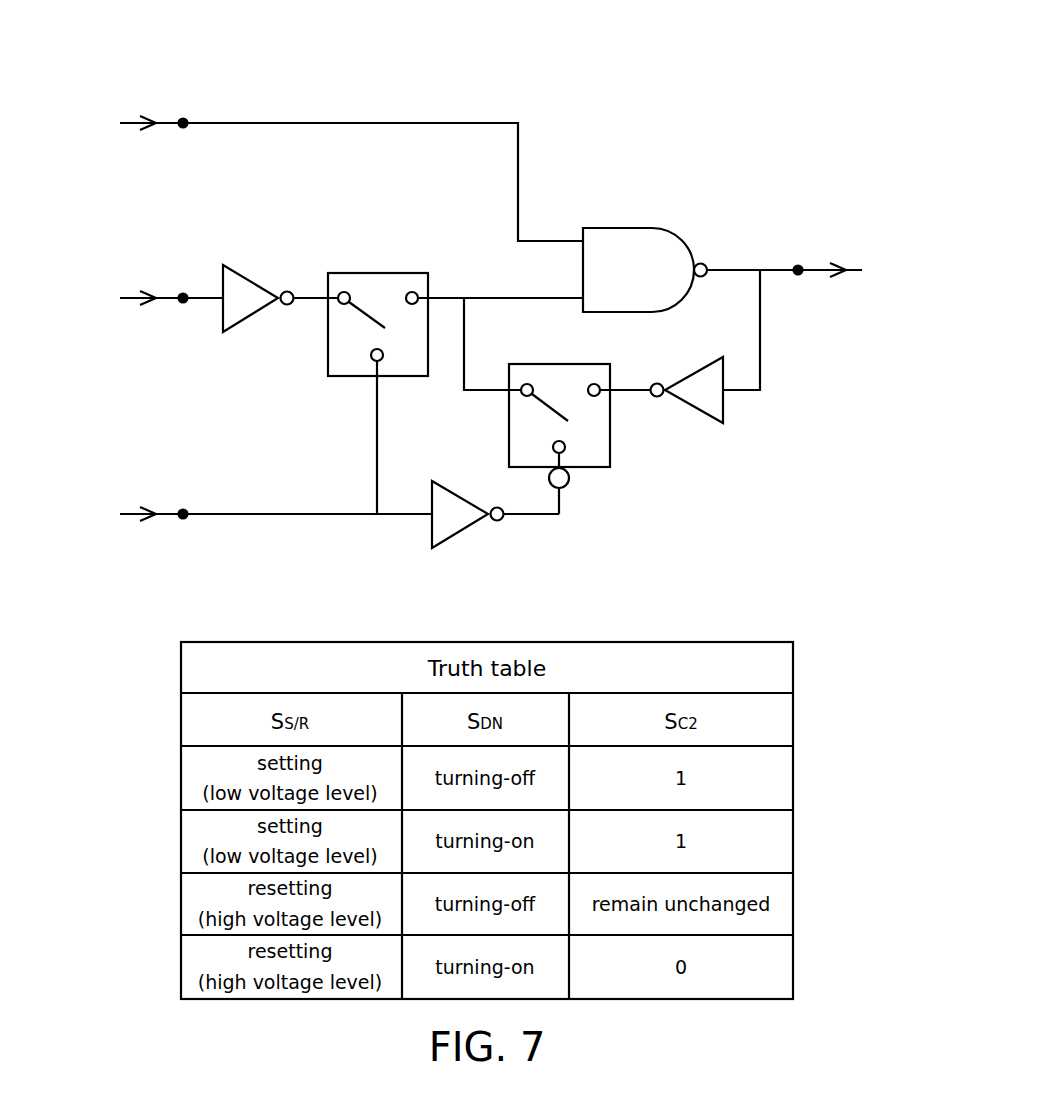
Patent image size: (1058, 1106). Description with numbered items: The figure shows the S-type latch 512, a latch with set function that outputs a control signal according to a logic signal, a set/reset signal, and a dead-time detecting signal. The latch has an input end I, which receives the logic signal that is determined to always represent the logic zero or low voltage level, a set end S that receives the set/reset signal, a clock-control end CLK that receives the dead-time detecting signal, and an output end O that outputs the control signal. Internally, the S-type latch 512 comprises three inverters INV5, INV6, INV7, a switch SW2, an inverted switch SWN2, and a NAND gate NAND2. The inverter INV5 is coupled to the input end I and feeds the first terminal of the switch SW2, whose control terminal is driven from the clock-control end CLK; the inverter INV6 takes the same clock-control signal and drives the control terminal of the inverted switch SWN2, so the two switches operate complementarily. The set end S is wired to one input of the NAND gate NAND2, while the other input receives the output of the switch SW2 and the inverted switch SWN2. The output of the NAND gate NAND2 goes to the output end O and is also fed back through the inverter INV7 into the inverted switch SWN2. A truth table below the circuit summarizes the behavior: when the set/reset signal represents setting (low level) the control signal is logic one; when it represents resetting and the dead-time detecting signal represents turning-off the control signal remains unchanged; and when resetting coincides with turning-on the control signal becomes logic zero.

The S-type latch 512 is at (733, 75).
The set end S is at (183, 118).
The input end I is at (183, 293).
The output end O is at (798, 265).
The clock-control end CLK is at (183, 509).
The inverter INV5 is at (262, 279).
The inverter INV6 is at (455, 536).
The inverter INV7 is at (727, 406).
The switch SW2 is at (378, 273).
The inverted switch SWN2 is at (610, 440).
The NAND gate NAND2 is at (645, 228).